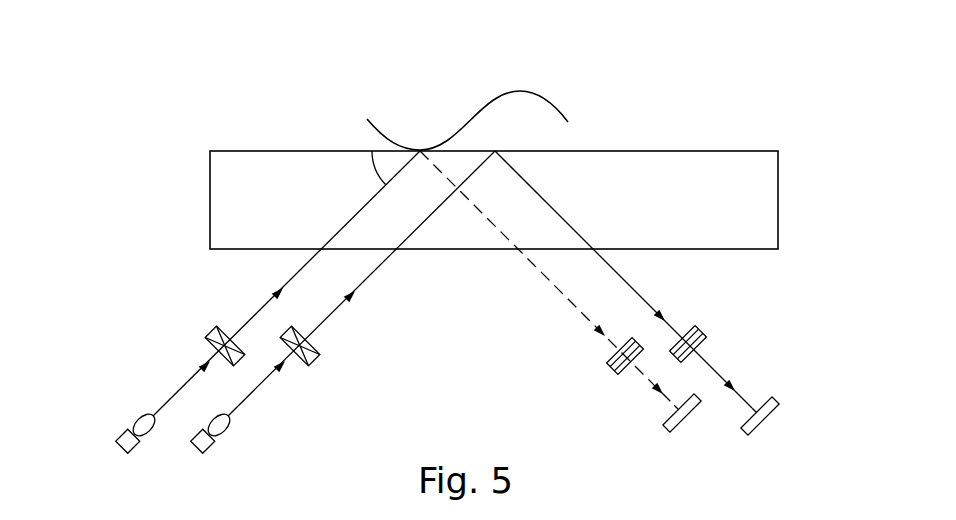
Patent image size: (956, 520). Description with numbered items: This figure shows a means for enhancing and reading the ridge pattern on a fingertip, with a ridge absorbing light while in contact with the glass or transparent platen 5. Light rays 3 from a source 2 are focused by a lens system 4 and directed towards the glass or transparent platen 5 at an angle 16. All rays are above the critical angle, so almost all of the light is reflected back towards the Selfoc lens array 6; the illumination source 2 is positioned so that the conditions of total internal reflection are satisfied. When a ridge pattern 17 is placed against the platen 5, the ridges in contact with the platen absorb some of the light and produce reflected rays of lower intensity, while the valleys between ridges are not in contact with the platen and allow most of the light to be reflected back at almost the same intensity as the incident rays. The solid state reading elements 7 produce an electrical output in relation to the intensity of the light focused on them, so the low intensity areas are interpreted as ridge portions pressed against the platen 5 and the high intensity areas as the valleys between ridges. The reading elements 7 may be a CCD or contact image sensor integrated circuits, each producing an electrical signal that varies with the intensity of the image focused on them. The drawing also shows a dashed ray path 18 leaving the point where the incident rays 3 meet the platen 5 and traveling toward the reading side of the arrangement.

The source 2 is at (133, 413).
The light rays 3 is at (183, 388).
The lens system 4 is at (203, 325).
The glass or transparent platen 5 is at (732, 150).
The Selfoc lens array 6 is at (615, 364).
The solid state reading elements 7 is at (668, 412).
The angle 16 is at (368, 170).
The ridge pattern 17 is at (556, 97).
The reflected beam 18 is at (533, 268).